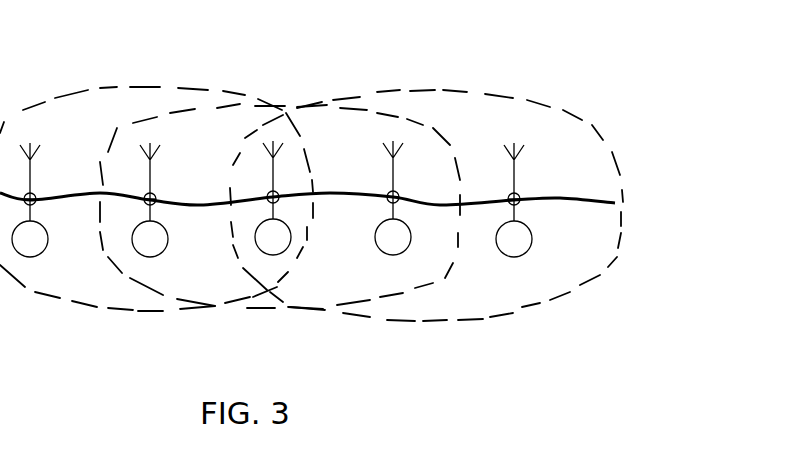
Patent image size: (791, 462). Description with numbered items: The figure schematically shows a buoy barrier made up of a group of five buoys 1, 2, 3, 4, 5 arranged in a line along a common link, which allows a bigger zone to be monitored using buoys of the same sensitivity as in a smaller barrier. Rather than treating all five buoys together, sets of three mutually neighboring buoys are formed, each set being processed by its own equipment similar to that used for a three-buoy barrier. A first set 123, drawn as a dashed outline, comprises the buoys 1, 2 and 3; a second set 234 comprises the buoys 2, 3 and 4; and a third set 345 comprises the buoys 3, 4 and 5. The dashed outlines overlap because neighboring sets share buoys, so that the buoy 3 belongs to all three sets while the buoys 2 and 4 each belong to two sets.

The buoy 1 is at (25, 250).
The buoy 2 is at (147, 252).
The buoy 3 is at (271, 249).
The buoy 4 is at (394, 245).
The buoy 5 is at (516, 245).
The first set 123 is at (146, 85).
The second set 234 is at (230, 106).
The third set 345 is at (424, 90).